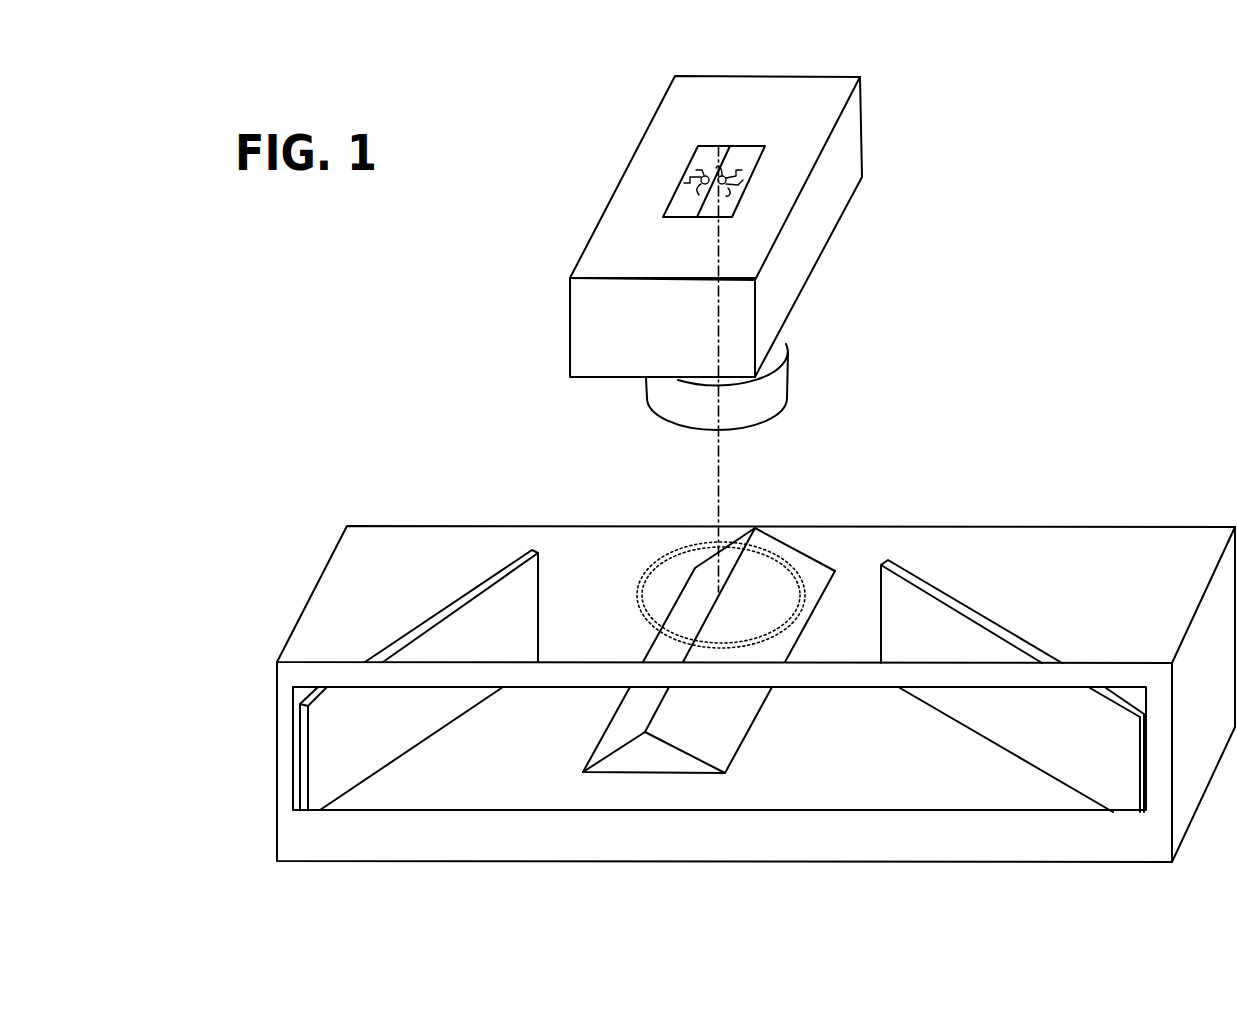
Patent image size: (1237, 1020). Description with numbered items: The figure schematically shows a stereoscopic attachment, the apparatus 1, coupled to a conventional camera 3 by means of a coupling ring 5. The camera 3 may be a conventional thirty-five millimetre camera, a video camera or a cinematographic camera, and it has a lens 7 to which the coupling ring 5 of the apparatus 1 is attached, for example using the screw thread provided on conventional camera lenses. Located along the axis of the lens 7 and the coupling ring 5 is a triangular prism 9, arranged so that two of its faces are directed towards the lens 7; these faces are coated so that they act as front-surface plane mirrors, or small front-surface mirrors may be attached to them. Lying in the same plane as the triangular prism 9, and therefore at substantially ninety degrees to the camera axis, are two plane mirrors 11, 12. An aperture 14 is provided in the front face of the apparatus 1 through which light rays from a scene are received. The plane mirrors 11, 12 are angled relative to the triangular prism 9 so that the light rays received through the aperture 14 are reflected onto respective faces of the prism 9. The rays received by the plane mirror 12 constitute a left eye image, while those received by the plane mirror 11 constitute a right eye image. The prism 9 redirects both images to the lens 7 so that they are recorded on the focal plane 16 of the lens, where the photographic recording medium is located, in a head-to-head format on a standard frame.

The apparatus 1 is at (1132, 542).
The camera 3 is at (846, 146).
The coupling ring 5 is at (665, 546).
The lens 7 is at (768, 394).
The triangular prism 9 is at (732, 707).
The plane mirror 11 is at (497, 620).
The plane mirror 12 is at (937, 617).
The aperture 14 is at (397, 787).
The focal plane 16 is at (690, 222).